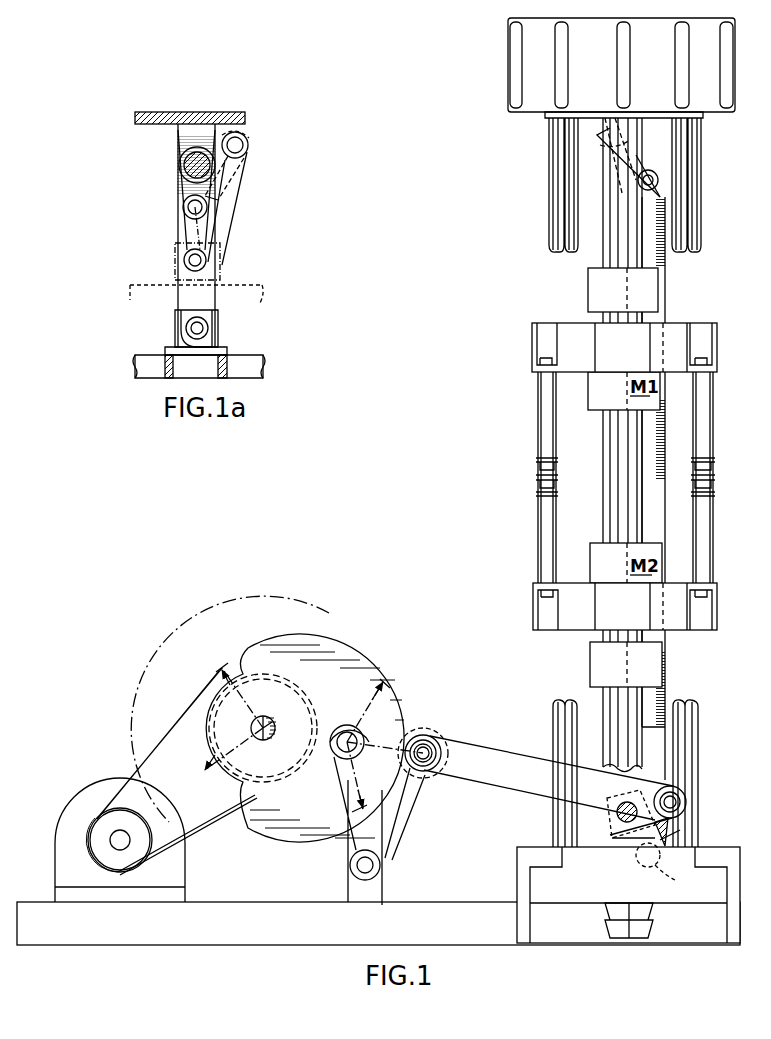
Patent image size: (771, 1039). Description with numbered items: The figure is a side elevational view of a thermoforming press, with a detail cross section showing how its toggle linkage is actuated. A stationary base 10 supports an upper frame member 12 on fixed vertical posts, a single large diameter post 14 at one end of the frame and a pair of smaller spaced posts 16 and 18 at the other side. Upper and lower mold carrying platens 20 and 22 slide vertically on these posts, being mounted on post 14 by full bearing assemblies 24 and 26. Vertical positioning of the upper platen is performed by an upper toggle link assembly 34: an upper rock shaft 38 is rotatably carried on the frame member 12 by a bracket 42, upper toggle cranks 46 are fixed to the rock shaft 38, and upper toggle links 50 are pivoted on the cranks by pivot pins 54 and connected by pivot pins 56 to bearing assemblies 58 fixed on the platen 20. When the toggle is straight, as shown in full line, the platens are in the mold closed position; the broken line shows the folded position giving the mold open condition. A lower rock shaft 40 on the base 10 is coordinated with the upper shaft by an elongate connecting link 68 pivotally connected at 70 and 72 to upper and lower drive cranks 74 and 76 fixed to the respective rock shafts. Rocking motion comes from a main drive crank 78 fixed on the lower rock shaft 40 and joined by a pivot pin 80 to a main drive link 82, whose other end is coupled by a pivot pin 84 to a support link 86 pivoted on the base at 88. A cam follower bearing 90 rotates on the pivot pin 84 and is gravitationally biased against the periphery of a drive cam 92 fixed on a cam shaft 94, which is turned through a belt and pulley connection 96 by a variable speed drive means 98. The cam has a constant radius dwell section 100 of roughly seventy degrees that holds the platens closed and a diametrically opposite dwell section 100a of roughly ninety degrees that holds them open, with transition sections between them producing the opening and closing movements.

In FIG. 1, the stationary base 10 is at (512, 884).
In FIG. 1a, the upper frame member 12 is at (133, 112).
In FIG. 1, the upper frame member 12 is at (505, 60).
In FIG. 1, the vertical post 14 is at (613, 453).
In FIG. 1, the vertical post 16 is at (556, 718).
In FIG. 1, the vertical post 18 is at (683, 718).
In FIG. 1a, the upper mold carrying platen 20 is at (265, 262).
In FIG. 1, the upper mold carrying platen 20 is at (528, 344).
In FIG. 1, the lower mold carrying platen 22 is at (529, 612).
In FIG. 1, the full bearing assembly 24 is at (585, 298).
In FIG. 1, the full bearing assembly 26 is at (588, 640).
In FIG. 1a, the upper toggle link assembly 34 is at (236, 250).
In FIG. 1a, the upper rock shaft 38 is at (184, 163).
In FIG. 1, the upper rock shaft 38 is at (612, 118).
In FIG. 1, the lower rock shaft 40 is at (616, 812).
In FIG. 1a, the bracket 42 is at (186, 140).
In FIG. 1a, the upper toggle crank 46 is at (222, 192).
In FIG. 1a, the upper toggle link 50 is at (232, 236).
In FIG. 1a, the pivot pin 54 is at (236, 140).
In FIG. 1a, the pivot pin 56 is at (184, 262).
In FIG. 1a, the bearing assembly 58 is at (174, 312).
In FIG. 1, the elongate connecting link 68 is at (652, 433).
In FIG. 1, the pivot connection 70 is at (648, 180).
In FIG. 1, the pivot connection 72 is at (669, 866).
In FIG. 1, the upper drive crank 74 is at (642, 166).
In FIG. 1, the lower drive crank 76 is at (676, 832).
In FIG. 1, the main drive crank 78 is at (612, 828).
In FIG. 1, the pivot pin 80 is at (686, 802).
In FIG. 1, the main drive link 82 is at (492, 756).
In FIG. 1, the pivot pin 84 is at (435, 745).
In FIG. 1, the support link 86 is at (410, 826).
In FIG. 1, the pivot 88 is at (374, 866).
In FIG. 1, the cam follower bearing 90 is at (421, 735).
In FIG. 1, the drive cam 92 is at (330, 645).
In FIG. 1, the cam shaft 94 is at (272, 722).
In FIG. 1, the belt and pulley connection 96 is at (175, 740).
In FIG. 1, the variable speed drive means 98 is at (104, 773).
In FIG. 1, the constant radius dwell section 100 is at (388, 720).
In FIG. 1, the dwell section 100a is at (205, 692).